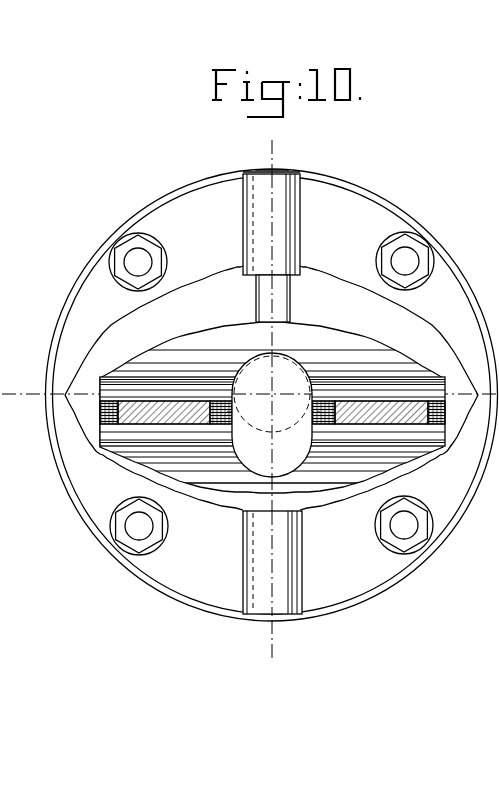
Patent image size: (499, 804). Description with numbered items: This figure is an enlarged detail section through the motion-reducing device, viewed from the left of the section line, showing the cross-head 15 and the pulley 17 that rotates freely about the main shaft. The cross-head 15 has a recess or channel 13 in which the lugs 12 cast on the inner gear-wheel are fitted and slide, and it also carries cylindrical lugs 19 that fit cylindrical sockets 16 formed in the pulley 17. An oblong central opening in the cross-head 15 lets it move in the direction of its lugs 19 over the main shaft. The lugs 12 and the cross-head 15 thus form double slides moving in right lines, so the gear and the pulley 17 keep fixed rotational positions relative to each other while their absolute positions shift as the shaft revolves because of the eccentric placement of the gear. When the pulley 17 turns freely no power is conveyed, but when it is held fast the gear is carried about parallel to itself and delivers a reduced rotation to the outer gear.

The lugs 12 is at (156, 384).
The recess or channel 13 is at (99, 412).
The cross-head 15 is at (249, 407).
The cylindrical sockets 16 is at (283, 232).
The pulley 17 is at (270, 395).
The cylindrical lugs 19 is at (276, 296).